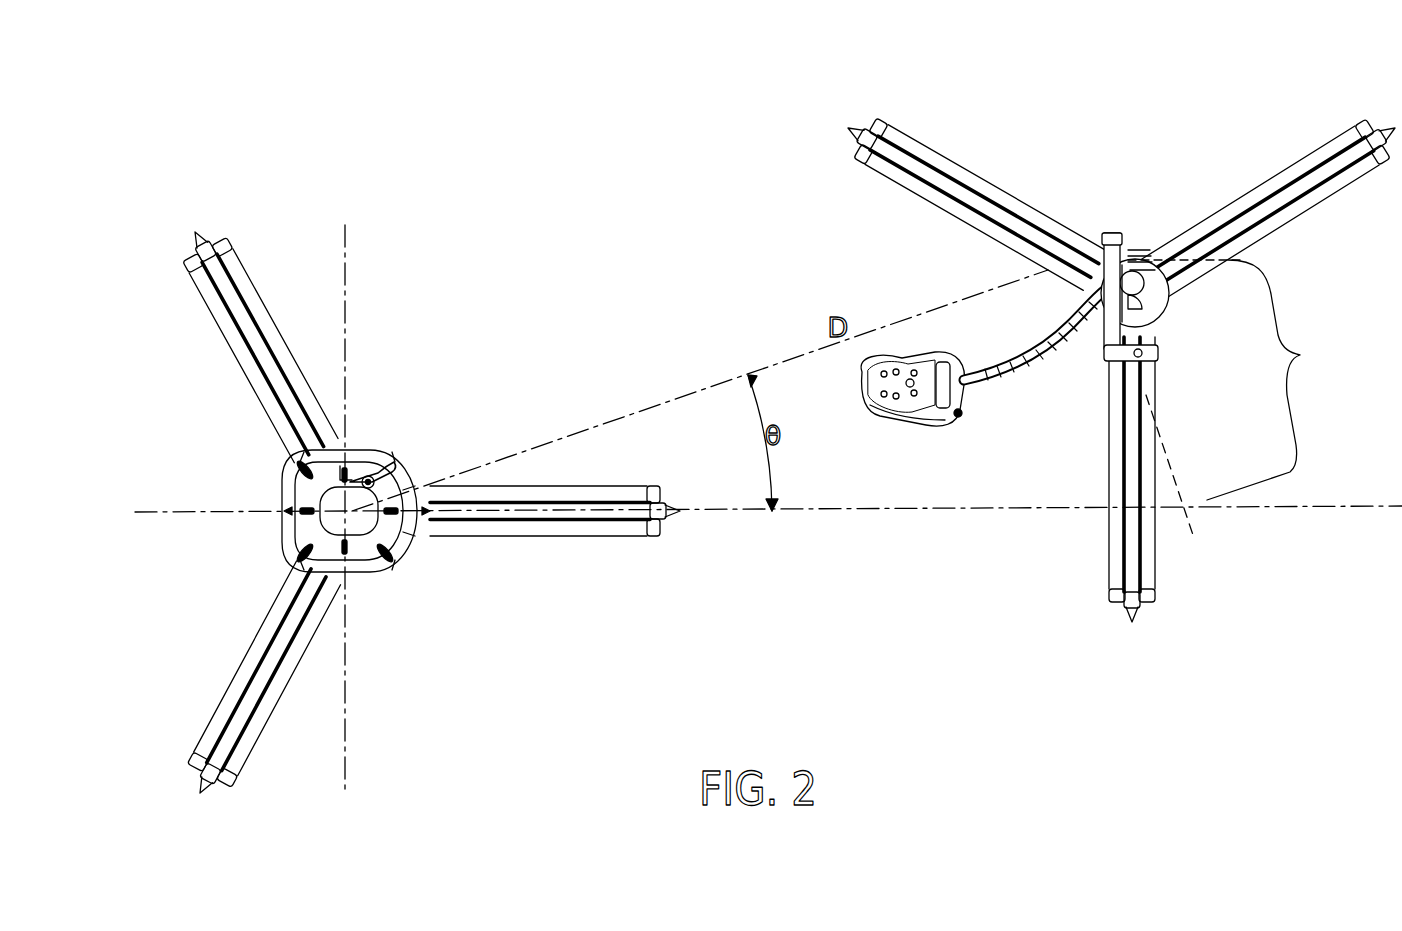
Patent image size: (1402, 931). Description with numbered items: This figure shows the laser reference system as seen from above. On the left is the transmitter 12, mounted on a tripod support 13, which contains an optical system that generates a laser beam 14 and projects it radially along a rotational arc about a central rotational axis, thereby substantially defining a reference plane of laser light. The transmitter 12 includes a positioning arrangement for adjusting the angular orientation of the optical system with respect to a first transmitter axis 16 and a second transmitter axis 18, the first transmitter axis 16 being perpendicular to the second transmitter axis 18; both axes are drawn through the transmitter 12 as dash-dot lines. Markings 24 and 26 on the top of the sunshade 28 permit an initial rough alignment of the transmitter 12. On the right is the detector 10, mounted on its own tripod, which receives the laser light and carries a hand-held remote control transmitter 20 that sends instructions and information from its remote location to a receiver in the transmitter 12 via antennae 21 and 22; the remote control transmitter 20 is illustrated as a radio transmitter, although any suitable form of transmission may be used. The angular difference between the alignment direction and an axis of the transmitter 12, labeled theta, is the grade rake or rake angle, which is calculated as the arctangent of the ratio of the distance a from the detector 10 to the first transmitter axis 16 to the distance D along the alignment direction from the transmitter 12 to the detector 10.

The detector 10 is at (1130, 227).
The transmitter 12 is at (426, 512).
The tripod support 13 is at (565, 536).
The laser beam 14 is at (688, 393).
The first transmitter axis 16 is at (910, 513).
The second transmitter axis 18 is at (348, 302).
The hand-held remote control transmitter 20 is at (950, 362).
The antenna 21 is at (962, 413).
The antenna 22 is at (398, 442).
The marking 24 is at (285, 497).
The marking 26 is at (352, 447).
The sunshade 28 is at (283, 548).